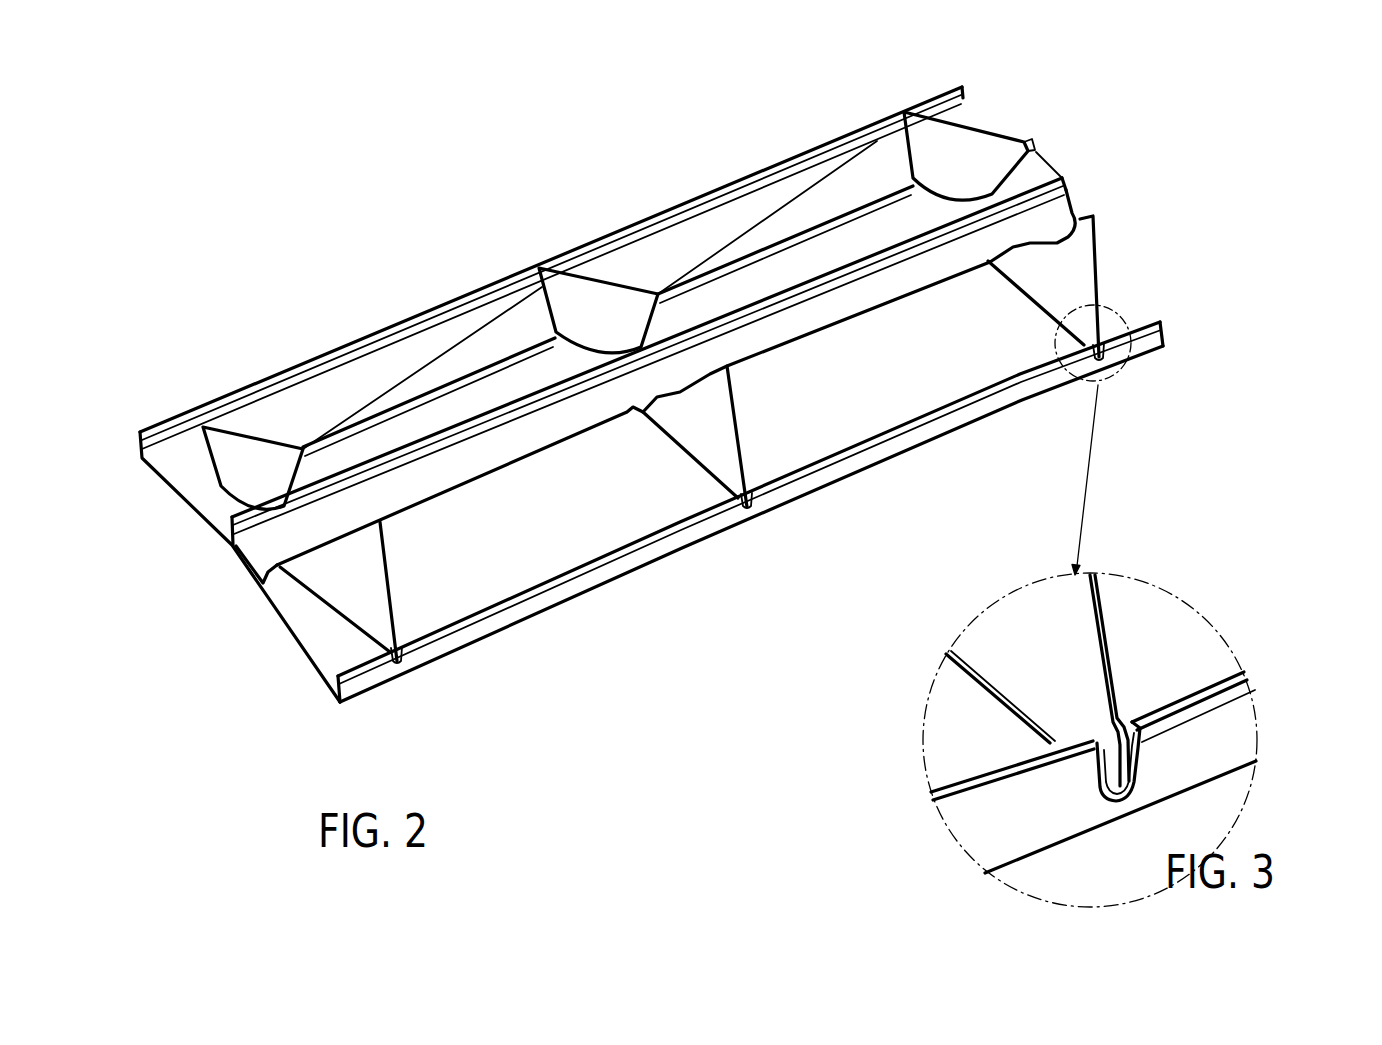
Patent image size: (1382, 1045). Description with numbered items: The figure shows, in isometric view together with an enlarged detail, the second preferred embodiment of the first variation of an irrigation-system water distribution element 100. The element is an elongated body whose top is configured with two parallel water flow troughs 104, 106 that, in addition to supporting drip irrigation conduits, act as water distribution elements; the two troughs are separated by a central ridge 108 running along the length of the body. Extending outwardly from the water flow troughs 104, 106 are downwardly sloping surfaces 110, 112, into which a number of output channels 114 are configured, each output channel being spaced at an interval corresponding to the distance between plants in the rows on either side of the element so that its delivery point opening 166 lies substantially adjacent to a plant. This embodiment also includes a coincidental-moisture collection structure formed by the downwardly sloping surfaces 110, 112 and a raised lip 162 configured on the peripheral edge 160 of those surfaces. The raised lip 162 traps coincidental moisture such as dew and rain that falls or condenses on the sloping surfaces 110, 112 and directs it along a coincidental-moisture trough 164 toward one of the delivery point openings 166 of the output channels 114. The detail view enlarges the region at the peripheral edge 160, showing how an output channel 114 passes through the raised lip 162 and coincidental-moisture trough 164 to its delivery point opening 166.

In FIG. 2, the water distribution element 100 is at (651, 388).
In FIG. 2, the water flow trough 104 is at (776, 261).
In FIG. 2, the water flow trough 106 is at (759, 370).
In FIG. 2, the central ridge 108 is at (803, 314).
In FIG. 2, the downwardly sloping surface 110 is at (551, 259).
In FIG. 2, the downwardly sloping surface 112 is at (643, 465).
In FIG. 2, the output channel 114 is at (698, 403).
In FIG. 3, the output channel 114 is at (1122, 611).
In FIG. 3, the peripheral edge 160 is at (1180, 769).
In FIG. 2, the raised lip 162 is at (650, 367).
In FIG. 3, the raised lip 162 is at (1145, 677).
In FIG. 2, the coincidental-moisture trough 164 is at (651, 389).
In FIG. 3, the coincidental-moisture trough 164 is at (1138, 643).
In FIG. 2, the delivery point opening 166 is at (747, 363).
In FIG. 3, the delivery point opening 166 is at (1072, 823).